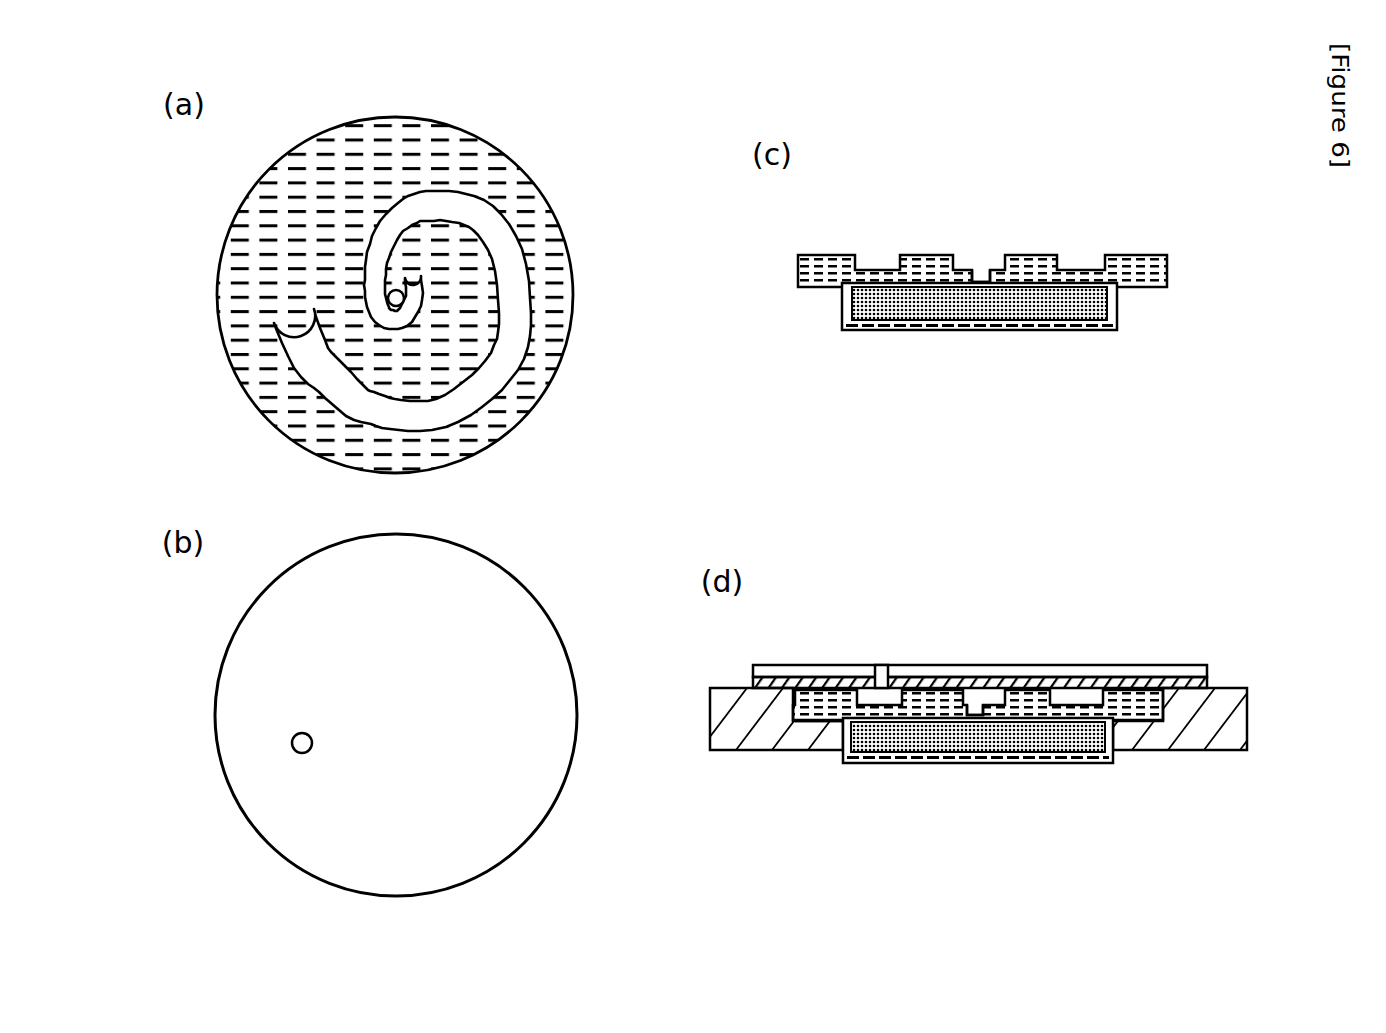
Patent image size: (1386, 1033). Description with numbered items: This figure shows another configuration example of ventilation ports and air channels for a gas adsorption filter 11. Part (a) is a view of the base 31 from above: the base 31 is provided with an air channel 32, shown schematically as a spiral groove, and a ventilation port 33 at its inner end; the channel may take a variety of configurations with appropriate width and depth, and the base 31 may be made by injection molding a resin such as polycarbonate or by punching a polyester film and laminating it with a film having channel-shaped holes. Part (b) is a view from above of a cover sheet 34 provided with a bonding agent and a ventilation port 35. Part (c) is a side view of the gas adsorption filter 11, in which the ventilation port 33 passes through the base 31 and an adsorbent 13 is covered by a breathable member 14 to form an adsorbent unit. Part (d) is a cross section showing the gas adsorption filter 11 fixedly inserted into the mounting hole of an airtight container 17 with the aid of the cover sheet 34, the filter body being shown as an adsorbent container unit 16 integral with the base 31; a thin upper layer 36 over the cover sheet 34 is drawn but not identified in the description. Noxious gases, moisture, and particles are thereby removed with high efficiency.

The gas adsorption filter 11 is at (1042, 580).
The adsorbent 13 is at (1027, 310).
The breathable member 14 is at (1090, 330).
The adsorbent container unit 16 is at (1245, 690).
The airtight container 17 is at (800, 747).
The base 31 is at (525, 205).
The air channel 32 is at (507, 327).
The ventilation port 33 is at (392, 295).
The cover sheet 34 is at (453, 658).
The ventilation port 35 is at (290, 743).
The cover layer 36 is at (1183, 665).